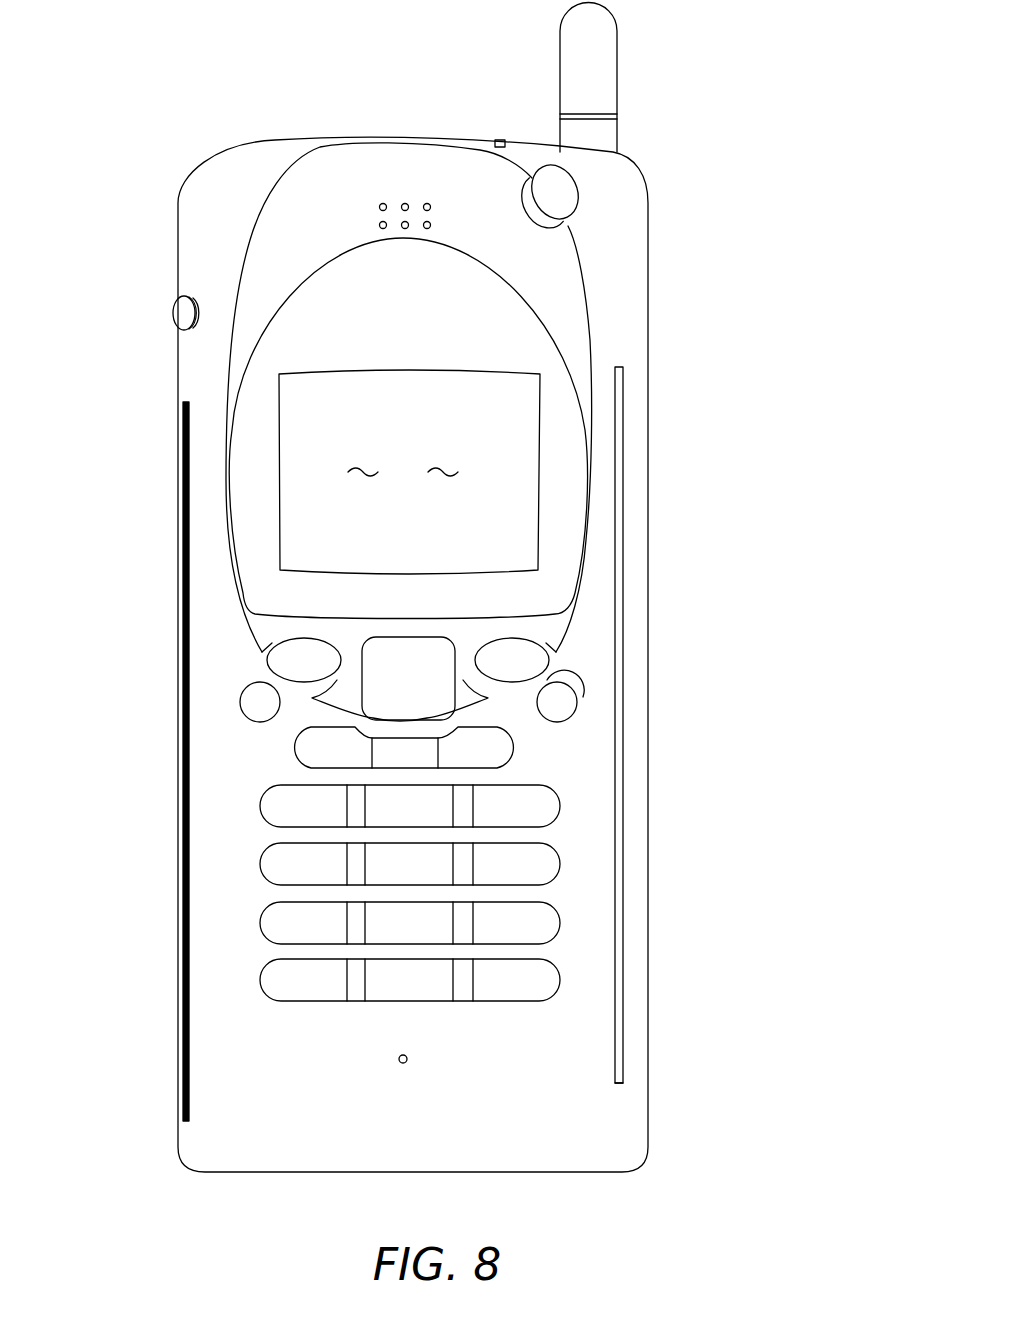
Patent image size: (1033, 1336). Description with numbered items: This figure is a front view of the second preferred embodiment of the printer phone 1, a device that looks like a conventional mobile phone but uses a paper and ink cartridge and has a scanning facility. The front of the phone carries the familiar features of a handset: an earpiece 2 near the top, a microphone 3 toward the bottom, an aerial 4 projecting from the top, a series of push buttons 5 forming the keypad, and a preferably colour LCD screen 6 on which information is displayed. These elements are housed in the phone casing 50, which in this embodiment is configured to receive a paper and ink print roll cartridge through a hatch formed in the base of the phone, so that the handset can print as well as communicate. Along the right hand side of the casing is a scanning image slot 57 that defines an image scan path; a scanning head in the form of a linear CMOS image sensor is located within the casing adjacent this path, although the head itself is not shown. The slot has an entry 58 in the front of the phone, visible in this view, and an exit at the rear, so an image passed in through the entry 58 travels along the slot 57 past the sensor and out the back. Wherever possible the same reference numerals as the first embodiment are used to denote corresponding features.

The printer phone 1 is at (455, 612).
The earpiece 2 is at (360, 162).
The microphone 3 is at (494, 1084).
The aerial 4 is at (597, 68).
The push buttons 5 is at (537, 802).
The LCD screen 6 is at (408, 428).
The phone casing 50 is at (246, 1114).
The scanning image slot 57 is at (623, 623).
The entry 58 is at (617, 997).